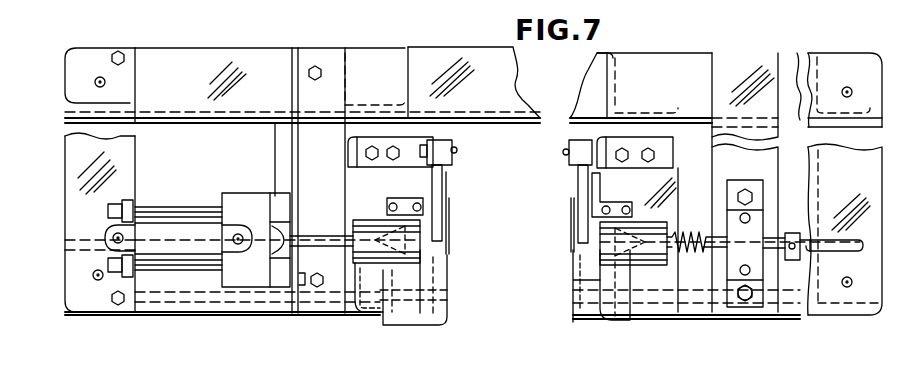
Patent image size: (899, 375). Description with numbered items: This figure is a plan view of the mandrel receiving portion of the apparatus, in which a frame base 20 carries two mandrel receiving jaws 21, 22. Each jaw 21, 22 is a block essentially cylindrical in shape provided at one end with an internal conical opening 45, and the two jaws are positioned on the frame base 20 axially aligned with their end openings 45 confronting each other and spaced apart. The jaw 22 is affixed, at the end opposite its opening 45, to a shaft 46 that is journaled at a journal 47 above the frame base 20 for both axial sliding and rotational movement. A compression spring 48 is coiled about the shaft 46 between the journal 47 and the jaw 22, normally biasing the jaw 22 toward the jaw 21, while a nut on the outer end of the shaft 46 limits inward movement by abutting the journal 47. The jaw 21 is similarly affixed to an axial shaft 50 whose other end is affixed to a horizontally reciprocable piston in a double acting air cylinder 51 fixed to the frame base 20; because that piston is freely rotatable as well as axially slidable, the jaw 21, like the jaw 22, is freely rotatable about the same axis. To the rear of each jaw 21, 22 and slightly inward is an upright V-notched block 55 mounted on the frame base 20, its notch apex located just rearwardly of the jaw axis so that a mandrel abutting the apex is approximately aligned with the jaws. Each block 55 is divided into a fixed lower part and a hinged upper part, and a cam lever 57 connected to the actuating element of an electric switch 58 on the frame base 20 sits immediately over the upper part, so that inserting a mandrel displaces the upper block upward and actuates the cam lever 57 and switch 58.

The frame base 20 is at (847, 310).
The mandrel receiving jaw 21 is at (375, 270).
The mandrel receiving jaw 22 is at (617, 263).
The internal conical opening 45 is at (430, 256).
The shaft 46 is at (827, 250).
The journal 47 is at (730, 268).
The compression spring 48 is at (690, 258).
The axial shaft 50 is at (292, 278).
The air cylinder 51 is at (180, 258).
The V-notched block 55 is at (442, 243).
The cam lever 57 is at (578, 180).
The electric switch 58 is at (571, 150).